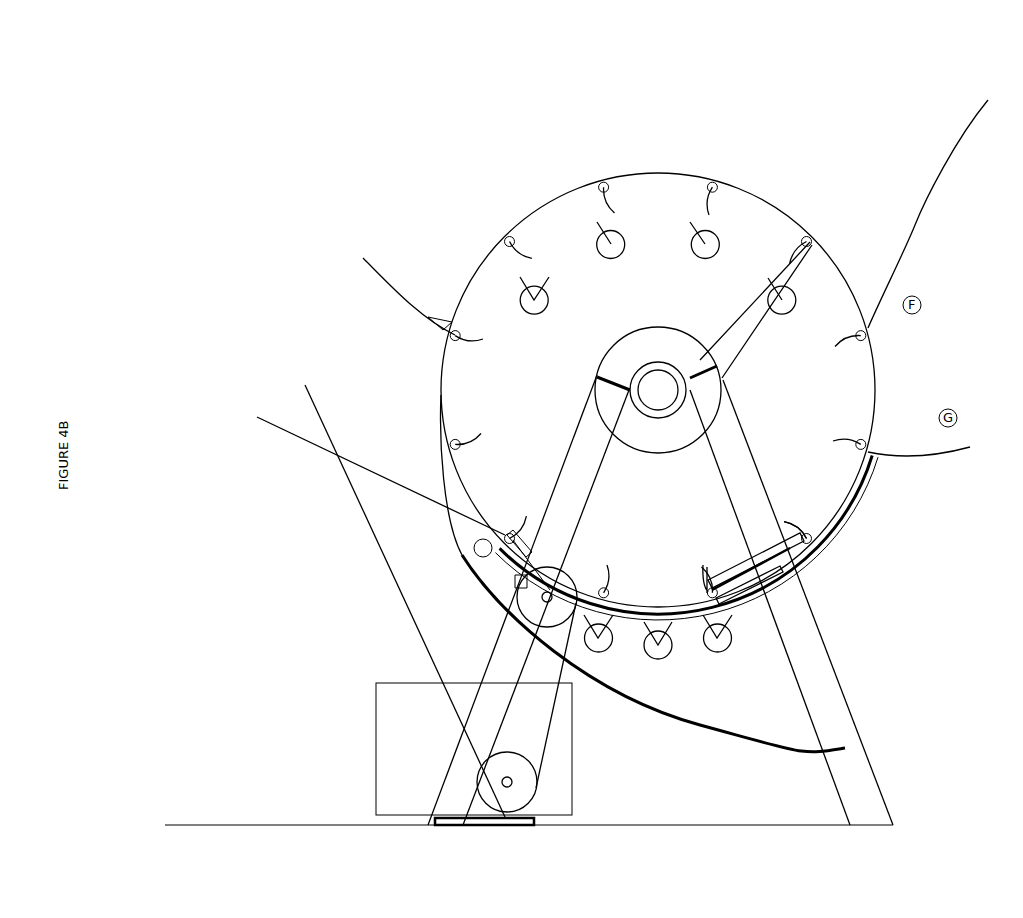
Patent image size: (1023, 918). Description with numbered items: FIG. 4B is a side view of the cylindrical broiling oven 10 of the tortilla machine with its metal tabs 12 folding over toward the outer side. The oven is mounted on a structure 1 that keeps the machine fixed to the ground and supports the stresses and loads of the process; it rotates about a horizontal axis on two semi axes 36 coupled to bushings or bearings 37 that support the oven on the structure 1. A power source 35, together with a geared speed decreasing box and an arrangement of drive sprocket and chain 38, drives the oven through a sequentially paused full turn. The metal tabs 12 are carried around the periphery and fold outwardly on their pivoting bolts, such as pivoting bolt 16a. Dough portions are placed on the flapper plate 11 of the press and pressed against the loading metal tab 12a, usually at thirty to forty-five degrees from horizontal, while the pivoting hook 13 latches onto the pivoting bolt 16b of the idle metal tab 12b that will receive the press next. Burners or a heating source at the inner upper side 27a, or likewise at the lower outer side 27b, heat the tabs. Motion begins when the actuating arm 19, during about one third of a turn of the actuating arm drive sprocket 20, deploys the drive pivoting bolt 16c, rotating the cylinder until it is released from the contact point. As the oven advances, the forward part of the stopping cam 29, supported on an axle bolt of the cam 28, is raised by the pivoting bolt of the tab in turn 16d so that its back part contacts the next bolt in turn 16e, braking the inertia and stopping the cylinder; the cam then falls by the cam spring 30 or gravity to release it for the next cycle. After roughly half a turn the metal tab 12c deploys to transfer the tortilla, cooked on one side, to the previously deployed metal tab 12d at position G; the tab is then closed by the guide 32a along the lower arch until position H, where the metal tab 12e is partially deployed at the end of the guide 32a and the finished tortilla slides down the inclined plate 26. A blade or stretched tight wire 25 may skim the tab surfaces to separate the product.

The structure 1 is at (845, 748).
The broiling oven 10 is at (721, 292).
The flapper plate 11 is at (383, 294).
The metal tab 12 is at (570, 182).
The loading metal tab 12a is at (465, 287).
The idle metal tab 12b is at (440, 393).
The metal tab 12c is at (915, 225).
The previously deployed metal tab 12d is at (912, 452).
The partially deployed metal tab 12e is at (440, 523).
The pivoting hook 13 is at (423, 322).
The blade pivot 16a is at (512, 232).
The pivoting bolt 16b is at (446, 340).
The drive pivoting bolt 16c is at (597, 598).
The pivoting bolt of the metal tab in turn 16d is at (710, 592).
The next bolt in turn 16e is at (817, 532).
The actuating arm 19 is at (545, 603).
The actuating arm drive sprocket 20 is at (516, 597).
The blade or stretched tight wire 25 is at (811, 239).
The inclined plate 26 is at (705, 720).
The inner upper side heating source 27a is at (609, 241).
The lower outer side heating source 27b is at (733, 638).
The axle bolt of the cam 28 is at (748, 563).
The stopping cam 29 is at (790, 575).
The cam spring 30 is at (765, 585).
The guide 32a is at (665, 613).
The power source 35 is at (375, 727).
The semi axes 36 is at (681, 368).
The bushings or bearings 37 is at (641, 364).
The drive chain 38 is at (340, 477).